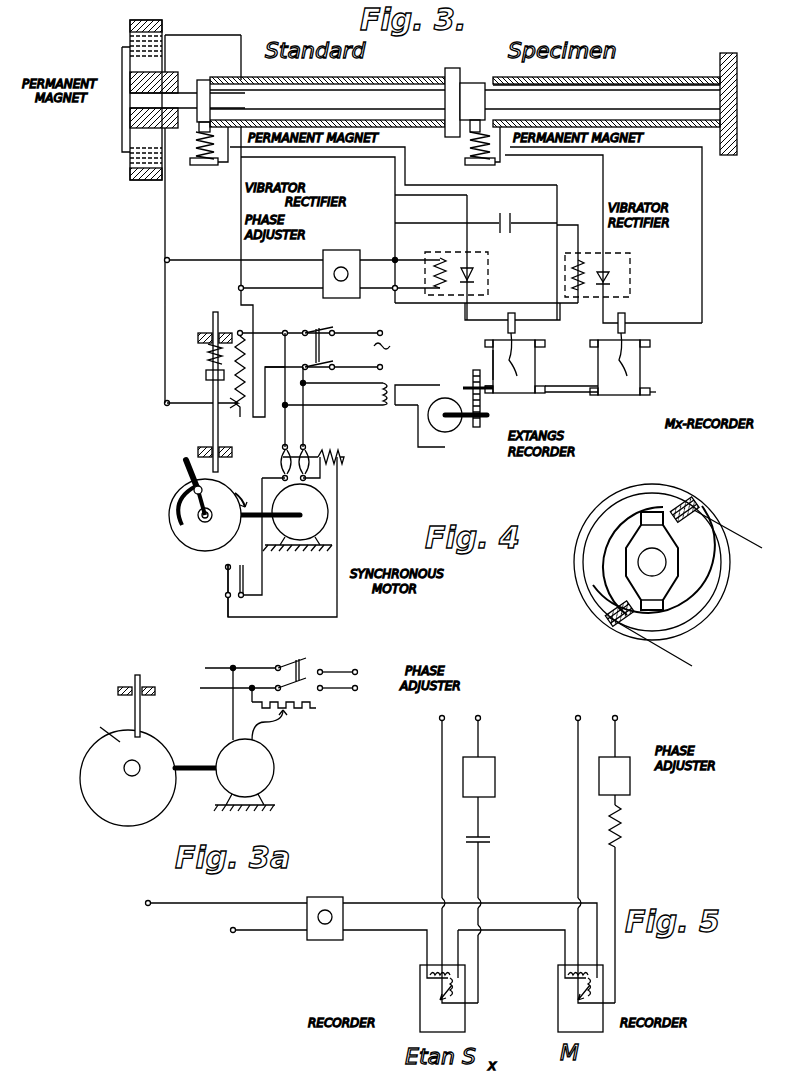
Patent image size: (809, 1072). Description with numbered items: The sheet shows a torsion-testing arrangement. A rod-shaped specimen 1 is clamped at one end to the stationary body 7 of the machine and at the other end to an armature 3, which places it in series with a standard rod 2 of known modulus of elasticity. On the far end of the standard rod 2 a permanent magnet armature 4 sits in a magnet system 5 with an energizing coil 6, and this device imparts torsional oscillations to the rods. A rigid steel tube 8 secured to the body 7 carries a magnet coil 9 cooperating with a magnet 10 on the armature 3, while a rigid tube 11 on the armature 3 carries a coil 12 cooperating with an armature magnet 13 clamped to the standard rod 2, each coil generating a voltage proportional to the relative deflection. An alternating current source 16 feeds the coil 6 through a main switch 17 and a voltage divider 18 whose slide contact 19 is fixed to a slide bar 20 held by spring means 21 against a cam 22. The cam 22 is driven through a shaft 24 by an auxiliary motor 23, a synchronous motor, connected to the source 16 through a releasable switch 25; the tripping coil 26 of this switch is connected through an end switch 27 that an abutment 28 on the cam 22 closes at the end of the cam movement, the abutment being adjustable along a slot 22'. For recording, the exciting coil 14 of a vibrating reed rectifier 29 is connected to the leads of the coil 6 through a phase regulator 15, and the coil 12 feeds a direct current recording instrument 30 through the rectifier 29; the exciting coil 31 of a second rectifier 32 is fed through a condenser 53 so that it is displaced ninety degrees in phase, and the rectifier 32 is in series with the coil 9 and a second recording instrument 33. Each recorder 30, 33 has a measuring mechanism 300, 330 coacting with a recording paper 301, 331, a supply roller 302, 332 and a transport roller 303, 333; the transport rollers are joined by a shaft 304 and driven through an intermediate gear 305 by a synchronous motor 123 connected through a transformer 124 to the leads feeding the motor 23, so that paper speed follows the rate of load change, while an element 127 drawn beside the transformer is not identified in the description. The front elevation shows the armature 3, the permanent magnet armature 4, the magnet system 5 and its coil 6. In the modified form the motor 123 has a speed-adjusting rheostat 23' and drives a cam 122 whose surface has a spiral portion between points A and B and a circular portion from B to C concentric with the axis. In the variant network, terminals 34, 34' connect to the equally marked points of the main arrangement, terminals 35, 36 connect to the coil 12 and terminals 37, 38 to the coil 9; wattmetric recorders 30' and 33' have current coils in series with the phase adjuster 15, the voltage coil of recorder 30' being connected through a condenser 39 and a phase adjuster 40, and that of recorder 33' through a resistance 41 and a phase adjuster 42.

In FIG. 3, the rod-shaped specimen 1 is at (645, 95).
In FIG. 3, the standard rod 2 is at (400, 95).
In FIG. 3, the armature 3 is at (458, 70).
In FIG. 4, the armature 3 is at (638, 566).
In FIG. 3, the permanent magnet armature 4 is at (160, 80).
In FIG. 4, the permanent magnet armature 4 is at (645, 528).
In FIG. 3, the magnet system 5 is at (130, 25).
In FIG. 4, the magnet system 5 is at (648, 494).
In FIG. 3, the energizing coil 6 is at (130, 45).
In FIG. 4, the energizing coil 6 is at (705, 585).
In FIG. 3, the stationary body 7 is at (737, 72).
In FIG. 3A, the stationary body 7 is at (155, 692).
In FIG. 3, the rigid steel tube 8 is at (700, 82).
In FIG. 3, the magnet coil 9 is at (470, 150).
In FIG. 3, the magnet 10 is at (470, 130).
In FIG. 3, the rigid tube 11 is at (225, 80).
In FIG. 3, the coil 12 is at (203, 160).
In FIG. 3, the armature magnet 13 is at (200, 132).
In FIG. 3, the exciting coil 14 is at (400, 204).
In FIG. 3, the phase regulator 15 is at (343, 252).
In FIG. 5, the phase regulator 15 is at (322, 940).
In FIG. 3, the alternating current source 16 is at (380, 350).
In FIG. 3, the main switch 17 is at (325, 328).
In FIG. 3A, the main switch 17 is at (300, 658).
In FIG. 3, the voltage divider 18 is at (245, 372).
In FIG. 3, the slide contact 19 is at (228, 405).
In FIG. 3, the slide bar 20 is at (213, 426).
In FIG. 3A, the slide bar 20 is at (140, 714).
In FIG. 3, the spring means 21 is at (208, 362).
In FIG. 3, the cam 22 is at (184, 515).
In FIG. 3, the slot 22' is at (144, 521).
In FIG. 3, the auxiliary motor 23 is at (305, 537).
In FIG. 3A, the speed-adjusting rheostat 23' is at (291, 721).
In FIG. 3, the shaft 24 is at (202, 520).
In FIG. 3A, the shaft 24 is at (130, 776).
In FIG. 3, the releasable switch 25 is at (283, 457).
In FIG. 3, the tripping coil 26 is at (328, 452).
In FIG. 3, the end switch 27 is at (226, 588).
In FIG. 3, the abutment 28 is at (192, 490).
In FIG. 3, the vibrating reed rectifier 29 is at (472, 280).
In FIG. 3, the direct current recording instrument 30 is at (496, 366).
In FIG. 5, the wattmetric measuring instrument 30' is at (418, 998).
In FIG. 3, the exciting coil 31 is at (570, 280).
In FIG. 3, the rectifier 32 is at (630, 235).
In FIG. 3, the second direct current recording instrument 33 is at (638, 367).
In FIG. 5, the wattmetric measuring instrument 33' is at (557, 998).
In FIG. 3, the terminal 34 is at (276, 260).
In FIG. 5, the terminal 34 is at (344, 930).
In FIG. 3, the terminal 34' is at (321, 288).
In FIG. 5, the terminal 34' is at (371, 943).
In FIG. 5, the terminal 35 is at (439, 718).
In FIG. 5, the terminal 36 is at (481, 718).
In FIG. 5, the terminal 37 is at (575, 718).
In FIG. 5, the terminal 38 is at (618, 718).
In FIG. 5, the condenser 39 is at (493, 845).
In FIG. 5, the phase adjuster 40 is at (456, 692).
In FIG. 5, the resistance 41 is at (622, 835).
In FIG. 5, the phase adjuster 42 is at (648, 748).
In FIG. 3, the condenser 53 is at (512, 226).
In FIG. 3A, the cam 122 is at (86, 806).
In FIG. 3A, the synchronous motor 123 is at (272, 776).
In FIG. 3, the transformer 124 is at (445, 432).
In FIG. 3, the coil 127 is at (395, 405).
In FIG. 3, the measuring mechanism 300 is at (515, 330).
In FIG. 3, the recording paper 301 is at (528, 366).
In FIG. 3, the roller 302 is at (540, 340).
In FIG. 3, the transport roller 303 is at (545, 392).
In FIG. 3, the shaft 304 is at (594, 393).
In FIG. 3, the intermediate gear 305 is at (472, 388).
In FIG. 3, the measuring mechanism 330 is at (625, 330).
In FIG. 3, the recording paper 331 is at (580, 392).
In FIG. 3, the roller 332 is at (650, 345).
In FIG. 3, the transport roller 333 is at (652, 392).
In FIG. 3A, the point A is at (122, 740).
In FIG. 3A, the point B is at (168, 812).
In FIG. 3A, the point C is at (104, 726).